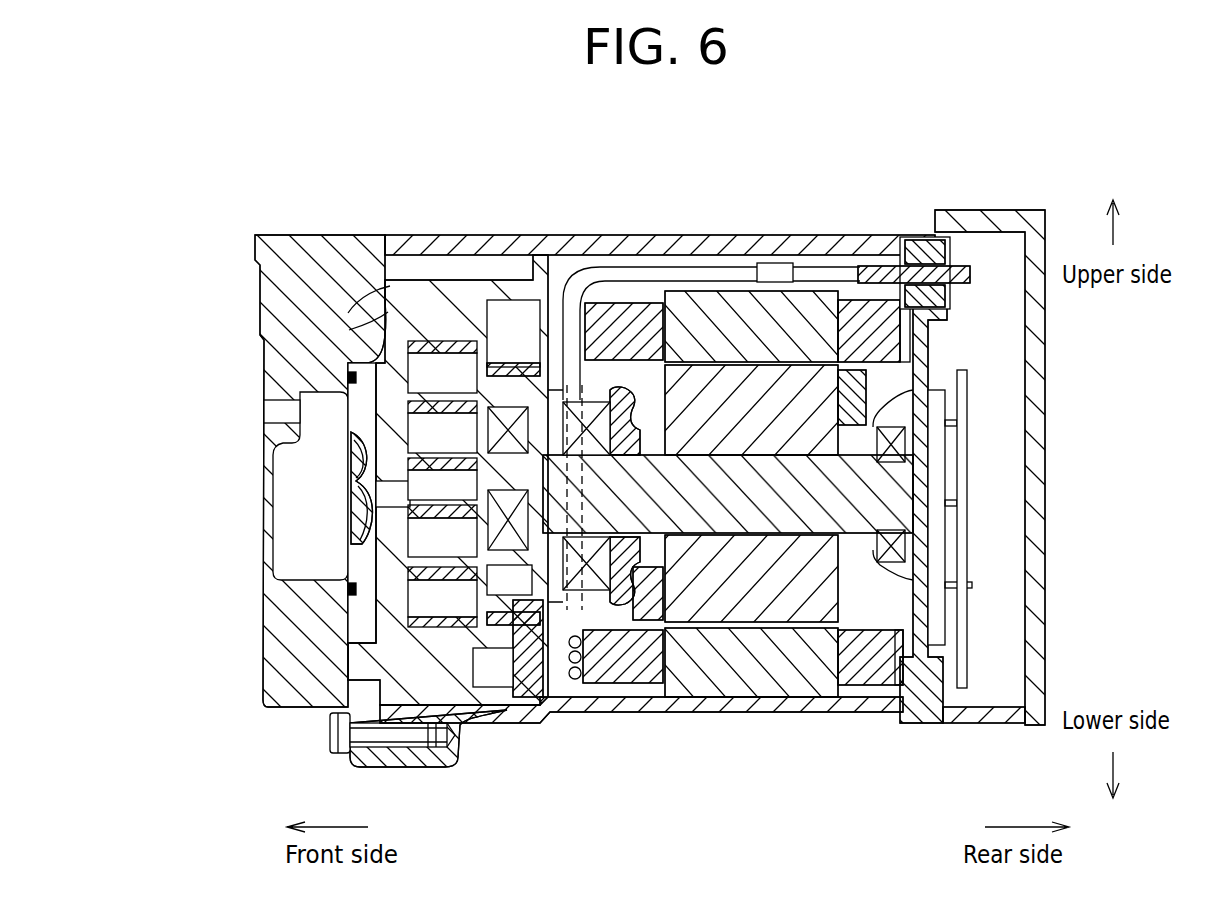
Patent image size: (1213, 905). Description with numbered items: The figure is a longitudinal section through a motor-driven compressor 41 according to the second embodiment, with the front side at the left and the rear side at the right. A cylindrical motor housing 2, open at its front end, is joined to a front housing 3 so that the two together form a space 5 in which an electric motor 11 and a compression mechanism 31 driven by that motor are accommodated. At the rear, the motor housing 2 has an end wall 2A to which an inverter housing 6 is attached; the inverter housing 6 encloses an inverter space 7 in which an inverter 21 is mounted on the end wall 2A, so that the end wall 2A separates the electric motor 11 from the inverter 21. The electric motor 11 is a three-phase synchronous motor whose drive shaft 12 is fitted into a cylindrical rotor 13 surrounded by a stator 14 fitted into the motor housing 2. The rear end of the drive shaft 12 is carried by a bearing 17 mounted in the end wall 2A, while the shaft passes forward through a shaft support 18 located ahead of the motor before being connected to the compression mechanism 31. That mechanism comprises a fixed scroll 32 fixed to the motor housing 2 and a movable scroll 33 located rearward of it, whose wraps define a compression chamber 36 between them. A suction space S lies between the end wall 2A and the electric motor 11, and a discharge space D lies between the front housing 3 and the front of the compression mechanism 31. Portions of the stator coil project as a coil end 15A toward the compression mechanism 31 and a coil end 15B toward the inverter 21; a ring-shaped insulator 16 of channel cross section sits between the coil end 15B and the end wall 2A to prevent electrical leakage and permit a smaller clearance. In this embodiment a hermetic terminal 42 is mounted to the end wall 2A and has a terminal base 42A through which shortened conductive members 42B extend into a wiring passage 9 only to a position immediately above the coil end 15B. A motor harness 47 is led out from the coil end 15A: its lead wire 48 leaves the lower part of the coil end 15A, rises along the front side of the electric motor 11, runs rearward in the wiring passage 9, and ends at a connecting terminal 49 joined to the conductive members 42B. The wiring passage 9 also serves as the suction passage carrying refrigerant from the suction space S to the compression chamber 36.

The motor housing 2 is at (738, 234).
The end wall 2A is at (928, 608).
The front housing 3 is at (262, 640).
The space 5 is at (655, 407).
The inverter housing 6 is at (1043, 667).
The inverter space 7 is at (1000, 341).
The wiring passage 9 is at (717, 262).
The electric motor 11 is at (700, 700).
The drive shaft 12 is at (737, 532).
The rotor 13 is at (777, 628).
The stator 14 is at (823, 697).
The coil end 15A is at (616, 684).
The coil end 15B is at (870, 686).
The insulator 16 is at (930, 657).
The bearing 17 is at (903, 548).
The shaft support 18 is at (518, 720).
The inverter 21 is at (965, 450).
The compression mechanism 31 is at (375, 345).
The fixed scroll 32 is at (358, 300).
The movable scroll 33 is at (476, 376).
The compression chamber 36 is at (462, 497).
The motor-driven compressor 41 is at (254, 202).
The hermetic terminal 42 is at (924, 229).
The terminal base 42A is at (915, 250).
The conductive members 42B is at (900, 262).
The motor harness 47 is at (600, 278).
The lead wire 48 is at (690, 265).
The connecting terminal 49 is at (833, 262).
The discharge space D is at (326, 504).
The suction space S is at (884, 617).